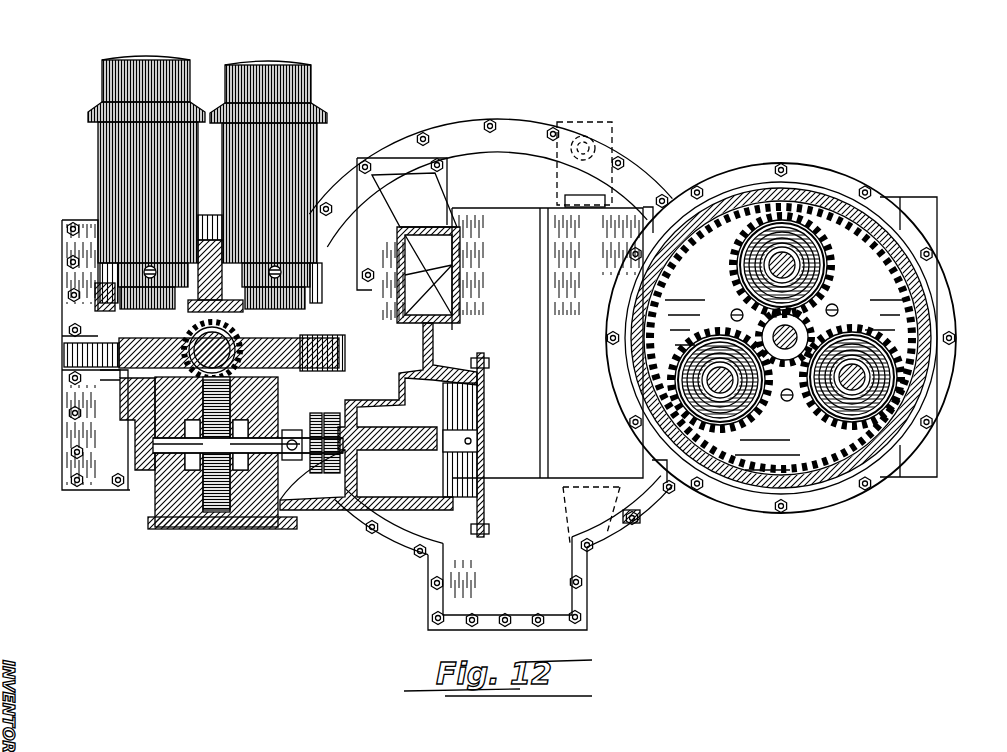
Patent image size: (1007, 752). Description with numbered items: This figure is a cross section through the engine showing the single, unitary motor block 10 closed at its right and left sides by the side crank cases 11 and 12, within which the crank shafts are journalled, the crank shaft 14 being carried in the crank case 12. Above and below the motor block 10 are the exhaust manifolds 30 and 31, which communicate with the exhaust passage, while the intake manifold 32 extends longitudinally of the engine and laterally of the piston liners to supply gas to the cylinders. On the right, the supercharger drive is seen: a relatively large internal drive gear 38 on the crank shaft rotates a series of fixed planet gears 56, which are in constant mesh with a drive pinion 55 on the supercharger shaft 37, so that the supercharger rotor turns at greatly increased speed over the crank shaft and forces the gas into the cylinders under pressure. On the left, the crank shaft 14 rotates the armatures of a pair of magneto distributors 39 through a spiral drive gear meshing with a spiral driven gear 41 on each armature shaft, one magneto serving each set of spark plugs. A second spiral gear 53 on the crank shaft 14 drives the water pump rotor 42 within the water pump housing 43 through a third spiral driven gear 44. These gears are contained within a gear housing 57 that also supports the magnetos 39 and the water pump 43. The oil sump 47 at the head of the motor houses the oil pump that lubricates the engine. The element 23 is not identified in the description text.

The motor block 10 is at (498, 210).
The side crank case 11 is at (937, 215).
The side crank case 12 is at (62, 313).
The crank shaft 14 is at (170, 372).
The housing flange 23 is at (505, 150).
The exhaust manifold 30 is at (615, 145).
The exhaust manifold 31 is at (655, 512).
The intake manifold 32 is at (395, 176).
The supercharger shaft 37 is at (836, 312).
The internal drive gear 38 is at (787, 250).
The magneto distributors 39 is at (223, 72).
The spiral driven gear 41 is at (333, 331).
The water pump rotor 42 is at (472, 422).
The water pump housing 43 is at (486, 380).
The third spiral driven gear 44 is at (222, 505).
The oil sump 47 is at (470, 597).
The second spiral gear 53 is at (150, 395).
The drive pinion 55 is at (800, 338).
The planet gears 56 is at (813, 215).
The gear housing 57 is at (135, 470).